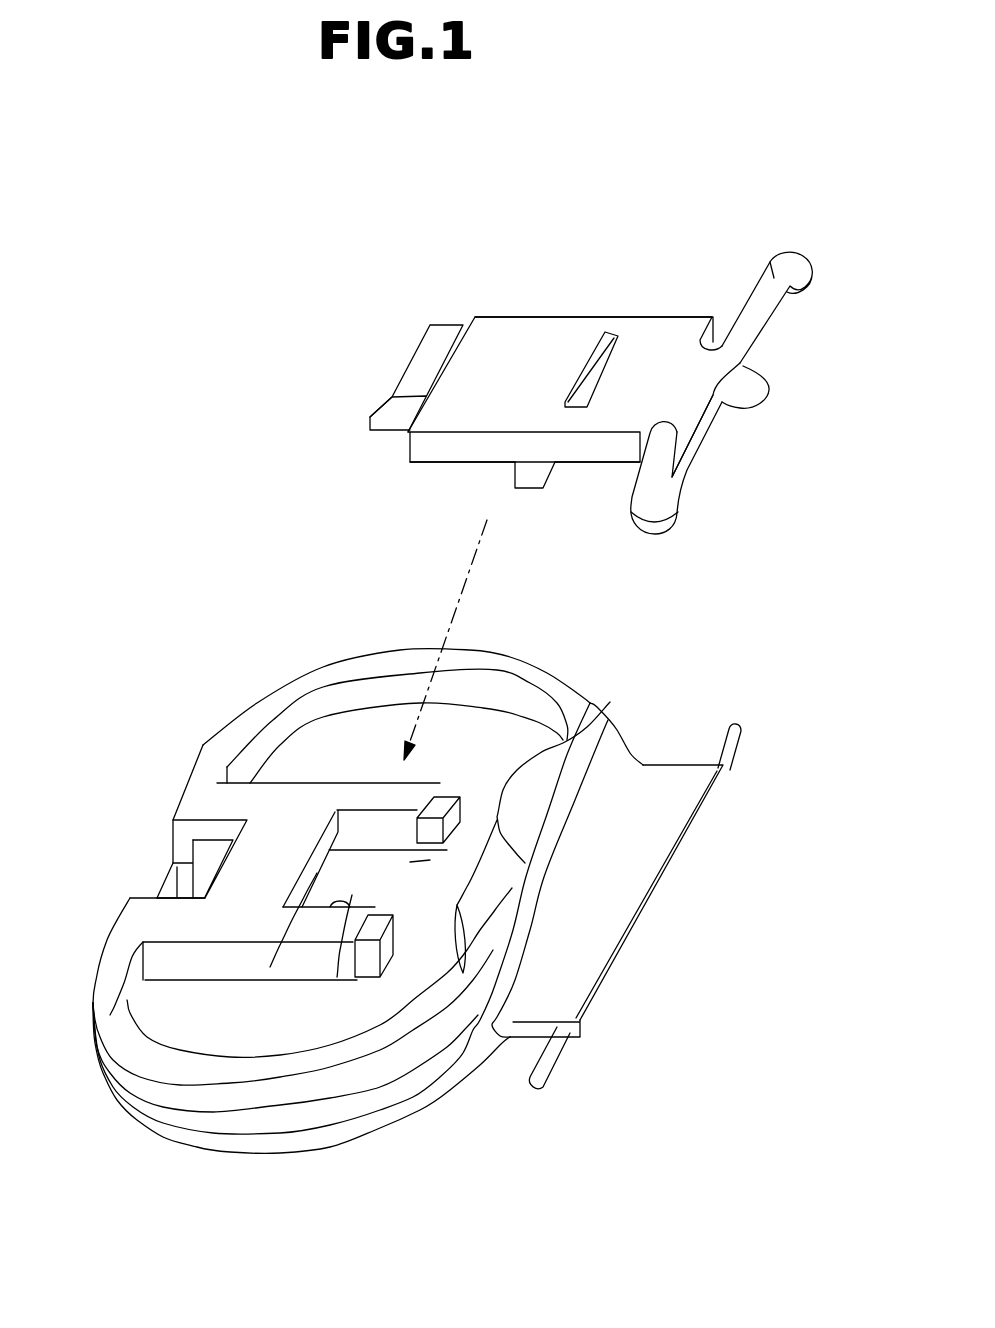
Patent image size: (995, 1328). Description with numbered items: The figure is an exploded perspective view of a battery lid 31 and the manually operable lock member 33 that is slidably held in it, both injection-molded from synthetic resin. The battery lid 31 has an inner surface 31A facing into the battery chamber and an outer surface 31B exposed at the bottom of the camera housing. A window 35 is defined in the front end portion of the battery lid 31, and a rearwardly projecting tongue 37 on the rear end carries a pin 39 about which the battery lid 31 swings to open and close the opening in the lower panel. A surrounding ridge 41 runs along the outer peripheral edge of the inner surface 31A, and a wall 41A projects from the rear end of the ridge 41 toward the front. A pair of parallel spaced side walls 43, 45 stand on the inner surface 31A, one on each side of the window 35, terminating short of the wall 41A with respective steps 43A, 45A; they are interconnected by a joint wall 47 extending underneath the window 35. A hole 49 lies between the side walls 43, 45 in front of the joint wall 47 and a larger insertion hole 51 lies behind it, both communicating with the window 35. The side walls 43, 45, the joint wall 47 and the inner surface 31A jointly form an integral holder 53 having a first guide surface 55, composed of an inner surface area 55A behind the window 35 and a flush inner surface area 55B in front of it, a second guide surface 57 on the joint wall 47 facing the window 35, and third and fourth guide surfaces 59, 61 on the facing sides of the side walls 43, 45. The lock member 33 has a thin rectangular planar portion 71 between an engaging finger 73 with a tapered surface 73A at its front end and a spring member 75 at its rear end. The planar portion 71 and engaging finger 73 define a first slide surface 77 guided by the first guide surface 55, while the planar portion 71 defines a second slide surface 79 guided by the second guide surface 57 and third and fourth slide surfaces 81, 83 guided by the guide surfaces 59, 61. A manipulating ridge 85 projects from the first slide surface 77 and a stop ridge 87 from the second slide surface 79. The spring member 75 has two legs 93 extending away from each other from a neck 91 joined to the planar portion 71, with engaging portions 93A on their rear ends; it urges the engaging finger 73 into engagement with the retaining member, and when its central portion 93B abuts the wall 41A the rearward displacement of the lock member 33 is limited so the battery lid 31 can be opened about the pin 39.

The battery lid 31 is at (322, 662).
The inner surface 31A is at (190, 1038).
The outer surface 31B is at (273, 1155).
The manually operable lock member 33 is at (617, 490).
The window 35 is at (367, 870).
The rearwardly projecting tongue 37 is at (507, 1042).
The pin 39 is at (560, 1058).
The surrounding ridge 41 is at (548, 674).
The wall 41A is at (610, 704).
The side wall 43 is at (200, 927).
The step 43A is at (333, 983).
The side wall 45 is at (227, 765).
The step 45A is at (437, 793).
The joint wall 47 is at (213, 835).
The hole 49 is at (178, 842).
The insertion hole 51 is at (447, 850).
The holder 53 is at (318, 800).
The first guide surface 55 is at (380, 887).
The inner surface area 55A is at (430, 860).
The inner surface area 55B is at (157, 877).
The second guide surface 57 is at (260, 983).
The third guide surface 59 is at (367, 903).
The fourth guide surface 61 is at (375, 820).
The planar portion 71 is at (597, 325).
The engaging finger 73 is at (440, 327).
The tapered surface 73A is at (407, 358).
The spring member 75 is at (767, 262).
The first slide surface 77 is at (473, 463).
The second slide surface 79 is at (560, 320).
The third slide surface 81 is at (593, 462).
The fourth slide surface 83 is at (680, 313).
The manipulating ridge 85 is at (532, 490).
The stop ridge 87 is at (598, 360).
The neck 91 is at (687, 410).
The leg 93 is at (752, 327).
The engaging portion 93A is at (813, 258).
The central portion 93B is at (750, 380).